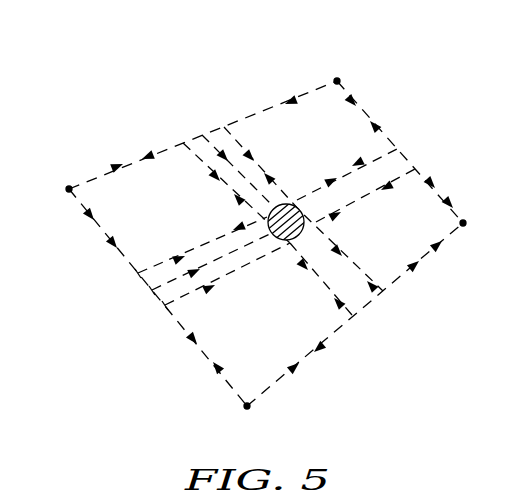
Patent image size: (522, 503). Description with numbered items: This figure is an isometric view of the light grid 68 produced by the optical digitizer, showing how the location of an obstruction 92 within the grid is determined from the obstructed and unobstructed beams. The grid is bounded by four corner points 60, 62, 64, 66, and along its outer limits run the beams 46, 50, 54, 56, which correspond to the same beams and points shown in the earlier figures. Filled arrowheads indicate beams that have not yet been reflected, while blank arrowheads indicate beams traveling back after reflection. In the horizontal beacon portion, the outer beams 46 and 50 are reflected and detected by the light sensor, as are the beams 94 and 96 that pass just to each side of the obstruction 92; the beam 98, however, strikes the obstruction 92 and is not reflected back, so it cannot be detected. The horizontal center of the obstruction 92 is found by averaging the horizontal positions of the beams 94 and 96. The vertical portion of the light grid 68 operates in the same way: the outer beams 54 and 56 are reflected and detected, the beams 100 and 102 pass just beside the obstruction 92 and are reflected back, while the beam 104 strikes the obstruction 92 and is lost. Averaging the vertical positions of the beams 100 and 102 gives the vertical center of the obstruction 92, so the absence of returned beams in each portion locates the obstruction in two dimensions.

The beam 46 is at (183, 319).
The beam 50 is at (406, 154).
The beam 54 is at (385, 280).
The beam 56 is at (313, 97).
The point 60 is at (69, 186).
The point 62 is at (338, 79).
The point 64 is at (251, 407).
The point 66 is at (464, 227).
The light grid 68 is at (182, 175).
The obstruction 92 is at (289, 201).
The beam 94 is at (324, 280).
The beam 96 is at (357, 270).
The beam 98 is at (204, 138).
The beam 100 is at (163, 265).
The beam 102 is at (373, 197).
The beam 104 is at (215, 258).